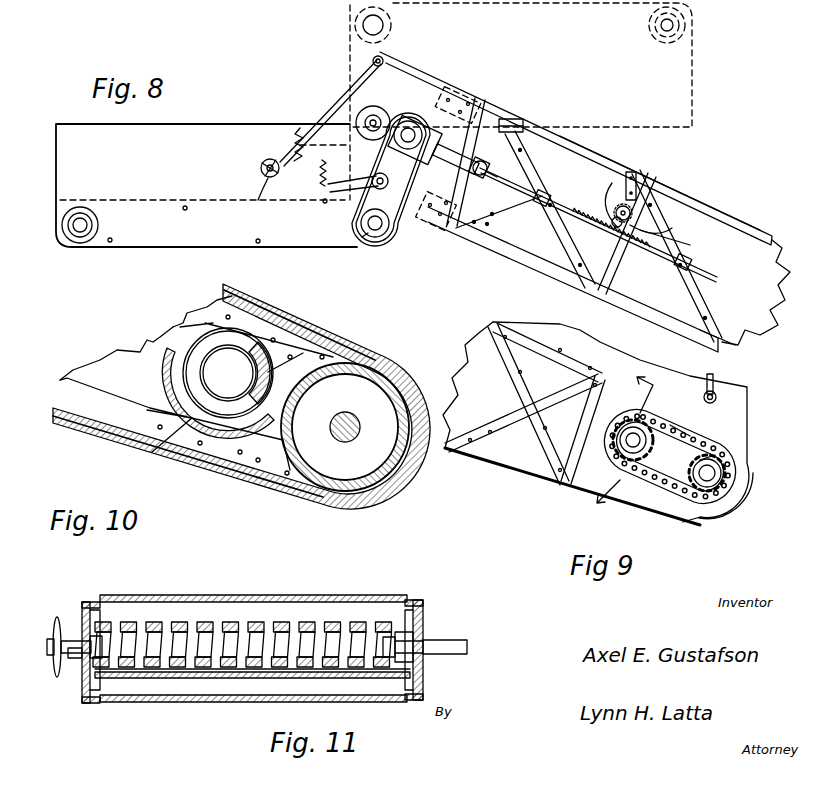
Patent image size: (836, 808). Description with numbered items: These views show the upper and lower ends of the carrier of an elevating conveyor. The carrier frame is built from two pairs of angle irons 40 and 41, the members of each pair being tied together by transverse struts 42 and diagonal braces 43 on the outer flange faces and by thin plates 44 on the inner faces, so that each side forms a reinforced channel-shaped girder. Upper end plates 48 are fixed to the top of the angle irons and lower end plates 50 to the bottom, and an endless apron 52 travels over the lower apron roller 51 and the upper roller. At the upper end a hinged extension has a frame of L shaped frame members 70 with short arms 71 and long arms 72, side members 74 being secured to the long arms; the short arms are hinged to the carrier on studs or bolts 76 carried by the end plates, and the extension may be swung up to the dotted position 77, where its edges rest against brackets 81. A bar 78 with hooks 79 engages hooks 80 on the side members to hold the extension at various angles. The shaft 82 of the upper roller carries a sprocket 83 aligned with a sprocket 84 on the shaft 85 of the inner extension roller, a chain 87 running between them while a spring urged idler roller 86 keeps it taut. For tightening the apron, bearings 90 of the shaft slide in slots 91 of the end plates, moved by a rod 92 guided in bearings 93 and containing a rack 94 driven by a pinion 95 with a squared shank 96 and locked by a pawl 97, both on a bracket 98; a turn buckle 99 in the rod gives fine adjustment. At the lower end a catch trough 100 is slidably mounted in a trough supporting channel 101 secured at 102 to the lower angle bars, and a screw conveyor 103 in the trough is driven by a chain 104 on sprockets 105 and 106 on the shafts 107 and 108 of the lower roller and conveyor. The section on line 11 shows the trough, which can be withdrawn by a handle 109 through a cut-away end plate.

In FIG. 9, the section line 11 is at (640, 454).
In FIG. 8, the upper angle irons 40 is at (759, 292).
In FIG. 10, the upper angle irons 40 is at (198, 304).
In FIG. 9, the upper angle irons 40 is at (492, 337).
In FIG. 8, the lower angle irons 41 is at (735, 333).
In FIG. 10, the lower angle irons 41 is at (135, 388).
In FIG. 9, the lower angle irons 41 is at (510, 460).
In FIG. 8, the transverse struts 42 is at (604, 263).
In FIG. 8, the diagonal braces 43 is at (697, 300).
In FIG. 9, the diagonal braces 43 is at (520, 393).
In FIG. 8, the plates 44 is at (520, 232).
In FIG. 10, the plates 44 is at (122, 349).
In FIG. 9, the plates 44 is at (478, 370).
In FIG. 8, the upper end plates 48 is at (418, 68).
In FIG. 9, the lower end plates 50 is at (662, 508).
In FIG. 11, the lower end plates 50 is at (85, 700).
In FIG. 10, the lower apron roller 51 is at (345, 427).
In FIG. 10, the endless apron 52 is at (68, 425).
In FIG. 9, the endless apron 52 is at (740, 506).
In FIG. 11, the endless apron 52 is at (268, 585).
In FIG. 8, the L shaped frame members 70 is at (391, 252).
In FIG. 8, the short arms 71 is at (325, 142).
In FIG. 8, the long arms 72 is at (200, 200).
In FIG. 8, the side members 74 is at (206, 185).
In FIG. 8, the studs or bolts 76 is at (350, 100).
In FIG. 8, the raised extension position 77 is at (692, 68).
In FIG. 8, the bar 78 is at (332, 112).
In FIG. 8, the hooks 79 is at (265, 160).
In FIG. 8, the hooks 80 is at (262, 200).
In FIG. 8, the brackets 81 is at (523, 122).
In FIG. 8, the shaft 82 is at (409, 128).
In FIG. 8, the sprocket 83 is at (375, 116).
In FIG. 8, the sprocket 84 is at (336, 198).
In FIG. 8, the shaft 85 is at (357, 231).
In FIG. 8, the spring urged idler roller 86 is at (322, 170).
In FIG. 8, the chain 87 is at (356, 246).
In FIG. 8, the bearings 90 is at (462, 96).
In FIG. 8, the slots 91 is at (499, 118).
In FIG. 8, the rod 92 is at (512, 184).
In FIG. 8, the bearings 93 is at (585, 142).
In FIG. 8, the rack 94 is at (615, 195).
In FIG. 8, the pinion 95 is at (672, 222).
In FIG. 8, the squared shank 96 is at (660, 215).
In FIG. 8, the pawl 97 is at (636, 195).
In FIG. 8, the bracket 98 is at (640, 212).
In FIG. 8, the turn buckle 99 is at (471, 172).
In FIG. 10, the catch trough 100 is at (215, 472).
In FIG. 11, the catch trough 100 is at (192, 680).
In FIG. 10, the trough supporting channel 101 is at (186, 434).
In FIG. 11, the trough supporting channel 101 is at (243, 680).
In FIG. 10, the securing point 102 is at (152, 438).
In FIG. 10, the screw conveyor 103 is at (326, 338).
In FIG. 11, the screw conveyor 103 is at (165, 622).
In FIG. 9, the chain 104 is at (690, 436).
In FIG. 9, the sprocket 105 is at (716, 455).
In FIG. 11, the sprocket 105 is at (57, 617).
In FIG. 9, the sprocket 106 is at (622, 450).
In FIG. 10, the shaft 107 is at (352, 404).
In FIG. 9, the shaft 107 is at (712, 472).
In FIG. 11, the shaft 107 is at (75, 660).
In FIG. 9, the shaft 108 is at (612, 448).
In FIG. 11, the handle 109 is at (468, 652).